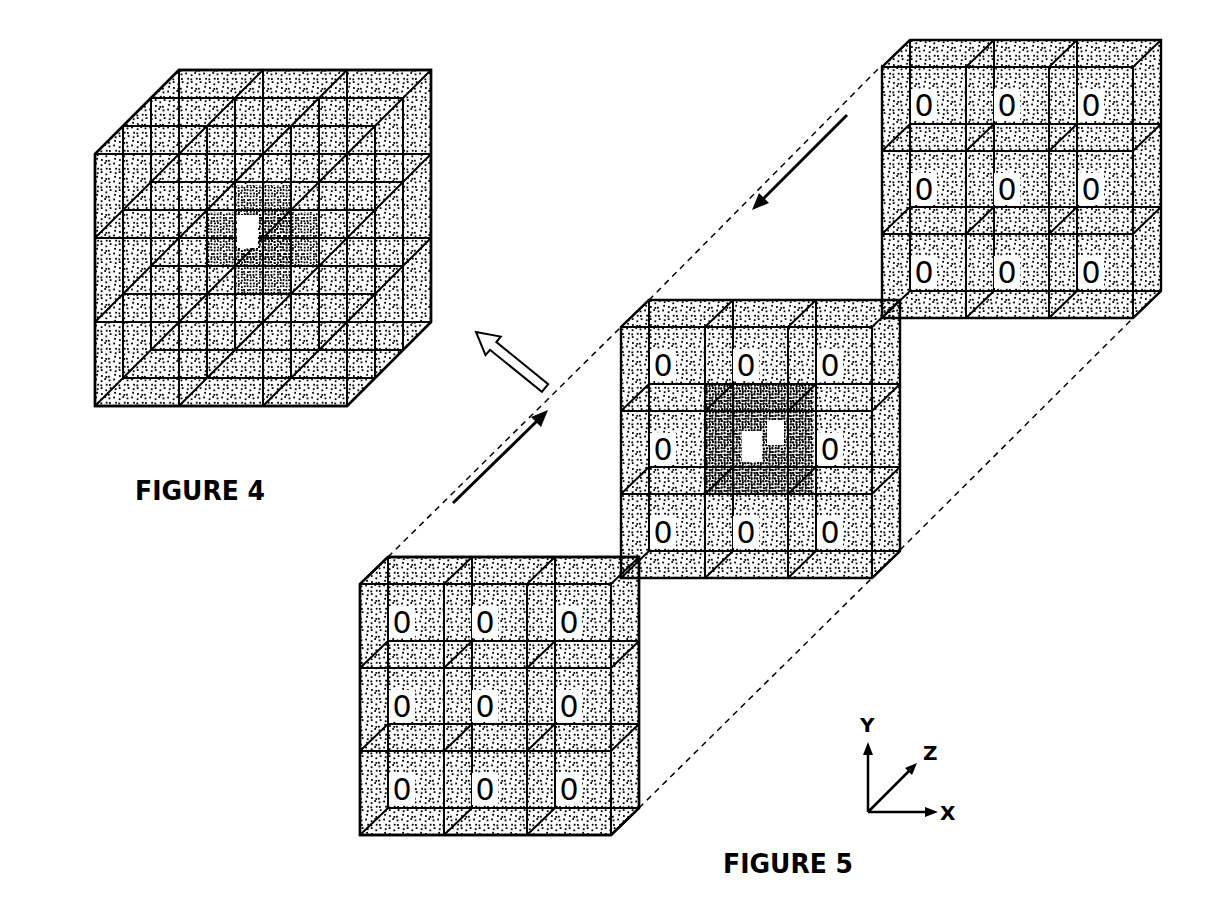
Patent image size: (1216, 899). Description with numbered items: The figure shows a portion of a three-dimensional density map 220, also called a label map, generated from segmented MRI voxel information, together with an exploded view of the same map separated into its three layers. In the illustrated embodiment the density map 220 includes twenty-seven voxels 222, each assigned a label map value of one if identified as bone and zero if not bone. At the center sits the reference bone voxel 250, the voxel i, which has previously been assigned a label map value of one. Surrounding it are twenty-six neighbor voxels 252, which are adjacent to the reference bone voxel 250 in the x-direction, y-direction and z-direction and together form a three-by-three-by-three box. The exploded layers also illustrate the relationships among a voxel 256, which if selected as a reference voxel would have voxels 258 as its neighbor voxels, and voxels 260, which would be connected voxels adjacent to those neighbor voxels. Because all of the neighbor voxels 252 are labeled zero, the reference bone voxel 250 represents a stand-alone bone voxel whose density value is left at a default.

In FIG. 4, the density map 220 is at (124, 40).
In FIG. 5, the density map 220 is at (840, 52).
In FIG. 4, the voxels 222 is at (93, 350).
In FIG. 5, the reference bone voxel 250 is at (777, 447).
In FIG. 5, the neighbor voxels 252 is at (359, 790).
In FIG. 5, the voxel 256 is at (640, 762).
In FIG. 5, the voxels 258 is at (488, 837).
In FIG. 5, the voxels 260 is at (359, 805).